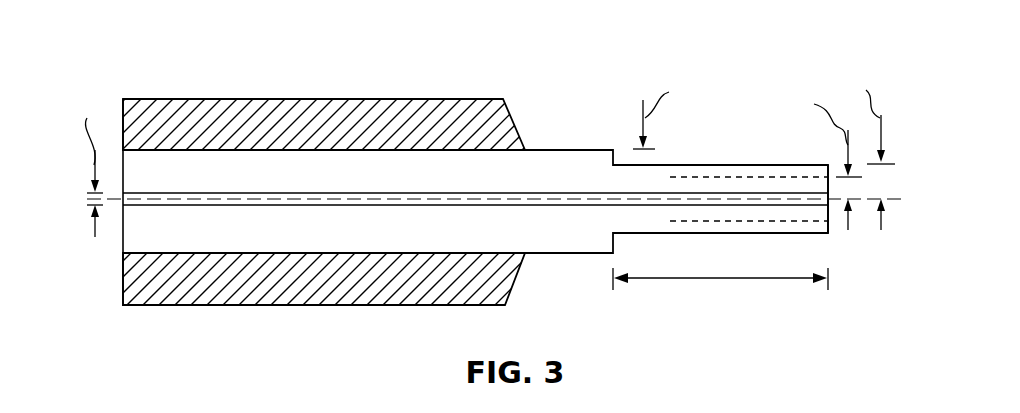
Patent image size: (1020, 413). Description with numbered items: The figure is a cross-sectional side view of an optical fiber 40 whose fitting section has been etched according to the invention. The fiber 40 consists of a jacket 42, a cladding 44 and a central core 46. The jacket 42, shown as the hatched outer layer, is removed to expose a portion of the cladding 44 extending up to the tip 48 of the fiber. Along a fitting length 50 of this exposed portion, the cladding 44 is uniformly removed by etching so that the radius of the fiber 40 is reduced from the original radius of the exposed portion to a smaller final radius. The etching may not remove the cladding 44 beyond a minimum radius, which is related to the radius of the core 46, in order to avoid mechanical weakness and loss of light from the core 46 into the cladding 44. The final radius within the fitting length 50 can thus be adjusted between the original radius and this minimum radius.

The fiber 40 is at (598, 68).
The jacket 42 is at (256, 97).
The cladding 44 is at (557, 241).
The core 46 is at (560, 161).
The tip 48 is at (850, 253).
The fitting length 50 is at (720, 289).